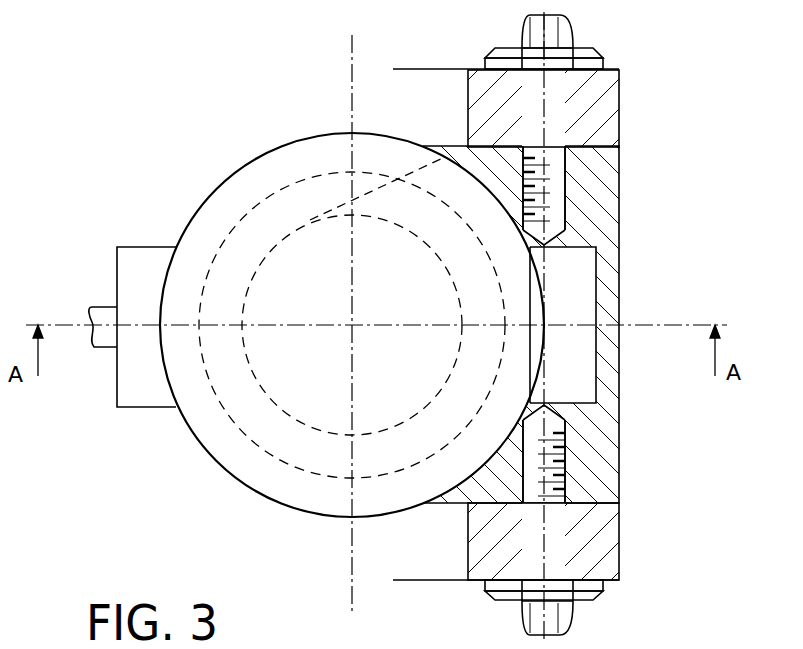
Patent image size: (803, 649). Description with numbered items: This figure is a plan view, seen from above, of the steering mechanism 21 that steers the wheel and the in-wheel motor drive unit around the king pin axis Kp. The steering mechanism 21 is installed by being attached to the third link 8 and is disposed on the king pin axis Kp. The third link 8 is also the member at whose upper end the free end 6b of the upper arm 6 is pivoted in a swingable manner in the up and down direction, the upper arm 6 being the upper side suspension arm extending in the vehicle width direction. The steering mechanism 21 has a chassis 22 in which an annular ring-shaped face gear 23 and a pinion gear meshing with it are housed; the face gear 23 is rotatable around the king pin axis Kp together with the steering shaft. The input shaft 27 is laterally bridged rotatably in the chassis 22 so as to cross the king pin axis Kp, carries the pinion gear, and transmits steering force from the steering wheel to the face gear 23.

The upper arm 6 is at (411, 69).
The free end 6b is at (619, 110).
The third link 8 is at (619, 442).
The steering mechanism 21 is at (598, 270).
The chassis 22 is at (190, 433).
The face gear 23 is at (309, 474).
The input shaft 27 is at (108, 350).
The king pin axis Kp is at (352, 325).